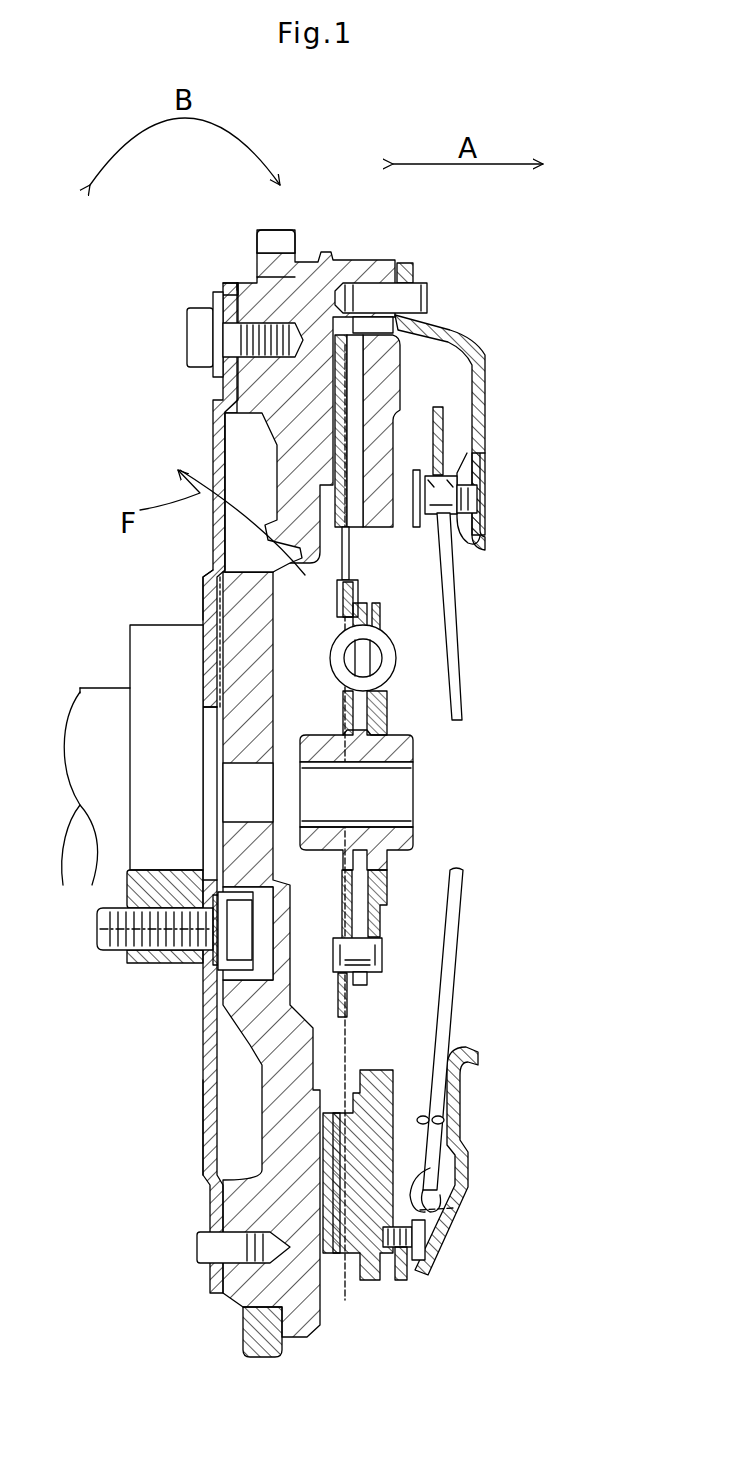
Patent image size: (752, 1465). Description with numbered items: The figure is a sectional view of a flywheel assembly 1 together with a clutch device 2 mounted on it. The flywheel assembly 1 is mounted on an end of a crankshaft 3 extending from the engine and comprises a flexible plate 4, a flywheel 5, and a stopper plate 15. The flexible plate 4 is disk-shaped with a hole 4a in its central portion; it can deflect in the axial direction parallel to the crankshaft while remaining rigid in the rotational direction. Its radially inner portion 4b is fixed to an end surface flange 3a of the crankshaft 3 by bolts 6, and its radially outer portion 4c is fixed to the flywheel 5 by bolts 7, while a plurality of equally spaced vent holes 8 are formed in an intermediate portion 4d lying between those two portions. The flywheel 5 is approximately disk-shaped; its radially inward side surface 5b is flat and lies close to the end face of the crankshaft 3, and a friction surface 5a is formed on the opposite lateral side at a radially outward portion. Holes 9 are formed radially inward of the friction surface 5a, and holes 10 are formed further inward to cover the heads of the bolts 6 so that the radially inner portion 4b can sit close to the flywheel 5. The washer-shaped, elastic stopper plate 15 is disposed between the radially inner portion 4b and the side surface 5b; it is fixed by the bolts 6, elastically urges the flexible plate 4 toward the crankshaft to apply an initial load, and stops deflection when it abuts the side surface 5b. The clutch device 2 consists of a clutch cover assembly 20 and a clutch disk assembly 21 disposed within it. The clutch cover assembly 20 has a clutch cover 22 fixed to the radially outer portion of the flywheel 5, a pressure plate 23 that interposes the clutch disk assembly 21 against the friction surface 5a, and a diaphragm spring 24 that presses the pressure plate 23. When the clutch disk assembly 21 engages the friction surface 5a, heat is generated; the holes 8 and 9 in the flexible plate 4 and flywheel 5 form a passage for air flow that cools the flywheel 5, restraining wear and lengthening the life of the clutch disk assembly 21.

The flywheel assembly 1 is at (198, 291).
The clutch device 2 is at (495, 348).
The crankshaft 3 is at (73, 716).
The end surface flange 3a is at (130, 683).
The flexible plate 4 is at (213, 415).
The hole 4a is at (200, 712).
The radially inner portion 4b is at (206, 606).
The radially outer portion 4c is at (229, 282).
The intermediate portion 4d is at (205, 1087).
The flywheel 5 is at (305, 265).
The friction surface 5a is at (340, 1092).
The radially inward side surface 5b is at (222, 744).
The bolts 6 is at (115, 952).
The bolts 7 is at (186, 326).
The vent holes 8 is at (215, 437).
The holes 9 is at (305, 576).
The holes 10 is at (265, 892).
The stopper plate 15 is at (210, 1000).
The clutch cover assembly 20 is at (493, 393).
The clutch disk assembly 21 is at (391, 613).
The clutch cover 22 is at (458, 336).
The pressure plate 23 is at (385, 365).
The diaphragm spring 24 is at (452, 583).